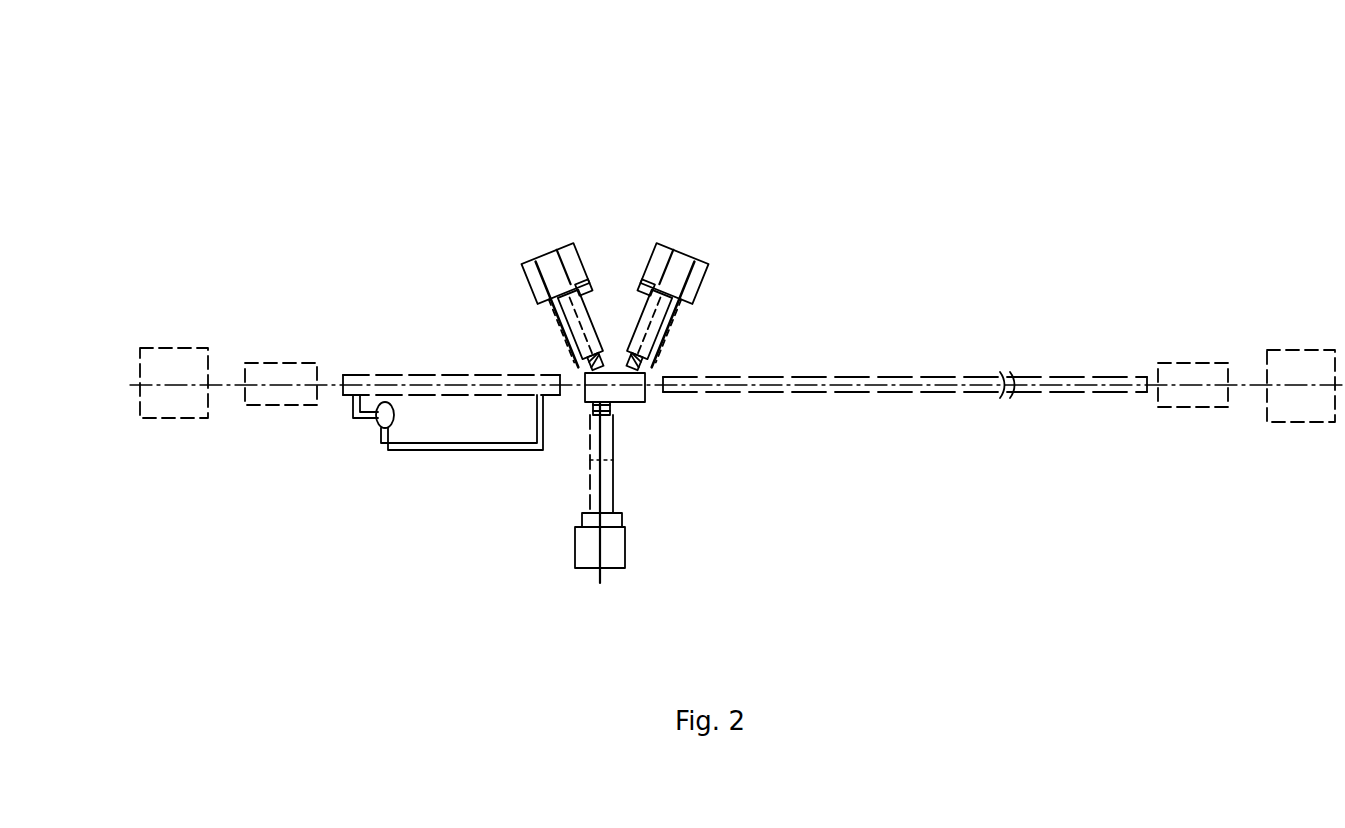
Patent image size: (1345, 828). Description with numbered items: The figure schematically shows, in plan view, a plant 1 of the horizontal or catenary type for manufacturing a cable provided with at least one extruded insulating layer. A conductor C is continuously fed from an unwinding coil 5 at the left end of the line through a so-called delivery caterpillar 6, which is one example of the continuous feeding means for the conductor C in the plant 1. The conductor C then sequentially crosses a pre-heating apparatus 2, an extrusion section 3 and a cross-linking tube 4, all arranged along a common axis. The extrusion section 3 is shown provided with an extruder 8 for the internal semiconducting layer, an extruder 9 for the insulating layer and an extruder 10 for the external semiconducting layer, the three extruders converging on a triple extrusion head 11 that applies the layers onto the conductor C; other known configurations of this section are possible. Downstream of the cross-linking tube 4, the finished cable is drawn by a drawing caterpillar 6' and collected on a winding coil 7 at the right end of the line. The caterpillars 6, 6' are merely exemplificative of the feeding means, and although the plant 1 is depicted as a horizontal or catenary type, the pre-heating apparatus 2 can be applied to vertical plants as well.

The plant 1 is at (731, 320).
The pre-heating apparatus 2 is at (393, 350).
The extrusion section 3 is at (603, 172).
The cross-linking tube 4 is at (876, 353).
The unwinding coil 5 is at (170, 420).
The delivery caterpillar 6 is at (274, 424).
The drawing caterpillar 6' is at (1192, 428).
The winding coil 7 is at (1302, 424).
The extruder for the internal semiconducting layer 8 is at (568, 256).
The extruder for the insulating layer 9 is at (590, 556).
The extruder for the external semiconducting layer 10 is at (650, 260).
The triple extrusion head 11 is at (633, 397).
The conductor C is at (219, 385).